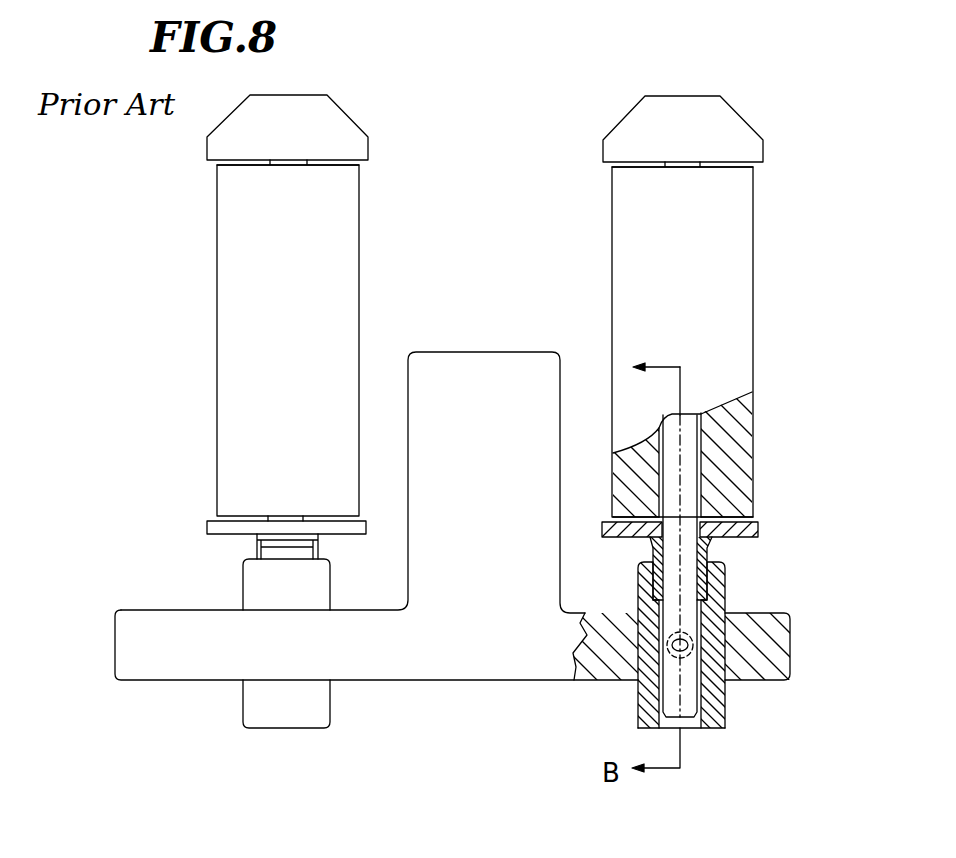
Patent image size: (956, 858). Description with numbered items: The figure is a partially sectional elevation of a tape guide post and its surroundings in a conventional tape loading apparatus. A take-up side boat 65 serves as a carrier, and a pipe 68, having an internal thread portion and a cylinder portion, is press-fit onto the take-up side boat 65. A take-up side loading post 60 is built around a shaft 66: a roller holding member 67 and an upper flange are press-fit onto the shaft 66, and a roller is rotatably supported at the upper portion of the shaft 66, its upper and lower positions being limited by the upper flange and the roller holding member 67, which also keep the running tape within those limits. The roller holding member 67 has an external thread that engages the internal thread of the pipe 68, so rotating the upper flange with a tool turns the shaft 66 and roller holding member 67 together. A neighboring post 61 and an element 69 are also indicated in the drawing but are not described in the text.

The take-up side loading post 60 is at (753, 267).
The cylinder 61 is at (359, 215).
The take-up side boat 65 is at (766, 613).
The shaft 66 is at (703, 438).
The roller holding member 67 is at (758, 527).
The pipe 68 is at (725, 698).
The pin 69 is at (652, 677).